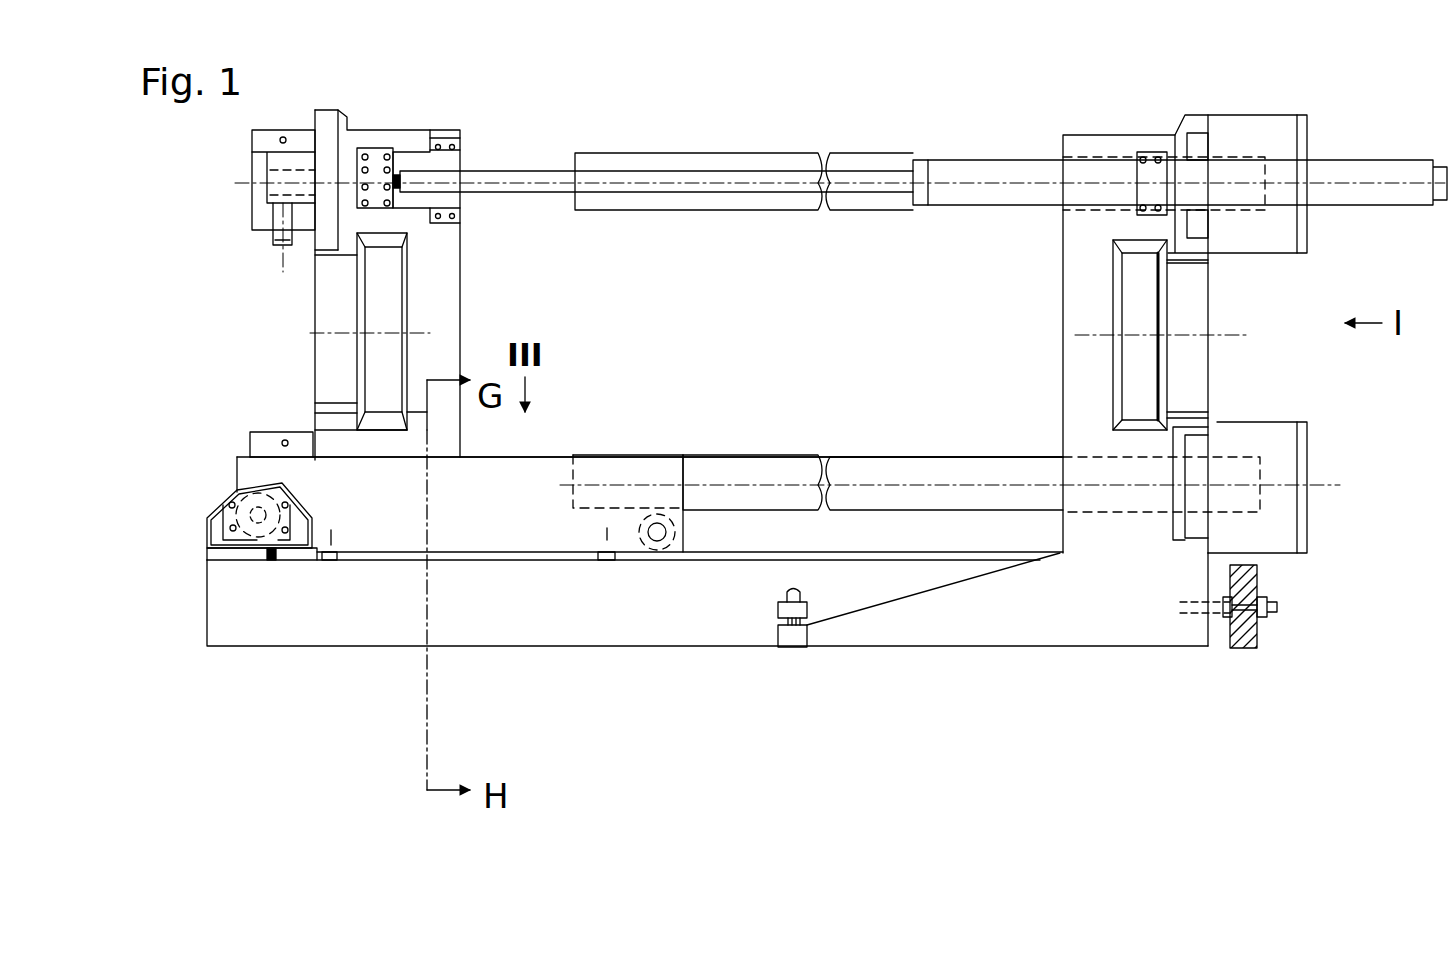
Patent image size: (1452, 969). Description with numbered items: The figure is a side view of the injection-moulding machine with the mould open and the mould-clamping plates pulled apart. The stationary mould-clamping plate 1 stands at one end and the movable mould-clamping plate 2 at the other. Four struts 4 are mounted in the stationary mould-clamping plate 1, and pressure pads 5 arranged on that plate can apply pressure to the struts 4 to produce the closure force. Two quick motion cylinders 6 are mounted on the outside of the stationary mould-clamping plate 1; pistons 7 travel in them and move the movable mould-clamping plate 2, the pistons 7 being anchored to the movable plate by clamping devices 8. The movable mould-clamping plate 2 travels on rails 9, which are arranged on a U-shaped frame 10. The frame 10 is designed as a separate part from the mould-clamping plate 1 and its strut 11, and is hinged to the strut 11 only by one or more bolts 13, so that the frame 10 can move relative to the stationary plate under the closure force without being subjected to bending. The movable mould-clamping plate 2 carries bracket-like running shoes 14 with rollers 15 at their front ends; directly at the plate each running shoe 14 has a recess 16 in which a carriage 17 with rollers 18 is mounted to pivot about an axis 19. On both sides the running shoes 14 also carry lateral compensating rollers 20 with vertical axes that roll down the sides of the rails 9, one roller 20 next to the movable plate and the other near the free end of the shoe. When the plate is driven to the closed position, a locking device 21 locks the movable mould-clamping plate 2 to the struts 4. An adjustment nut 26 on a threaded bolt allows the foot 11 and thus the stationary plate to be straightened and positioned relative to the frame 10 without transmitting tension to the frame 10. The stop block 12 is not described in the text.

The stationary mould-clamping plate 1 is at (1188, 311).
The movable mould-clamping plate 2 is at (432, 297).
The struts 4 is at (865, 162).
The pressure pads 5 is at (1240, 135).
The quick motion cylinders 6 is at (990, 172).
The pistons 7 is at (500, 175).
The clamping devices 8 is at (388, 150).
The rails 9 is at (740, 552).
The U-shaped frame 10 is at (758, 620).
The strut 11 is at (1005, 615).
The stop block 12 is at (1258, 580).
The bolts 13 is at (1280, 607).
The running shoes 14 is at (545, 488).
The rollers 15 is at (670, 543).
The recess 16 is at (262, 478).
The carriage 17 is at (272, 548).
The rollers 18 is at (246, 522).
The axis 19 is at (235, 493).
The lateral compensating rollers 20 is at (322, 560).
The locking device 21 is at (280, 126).
The adjustment nut 26 is at (803, 623).